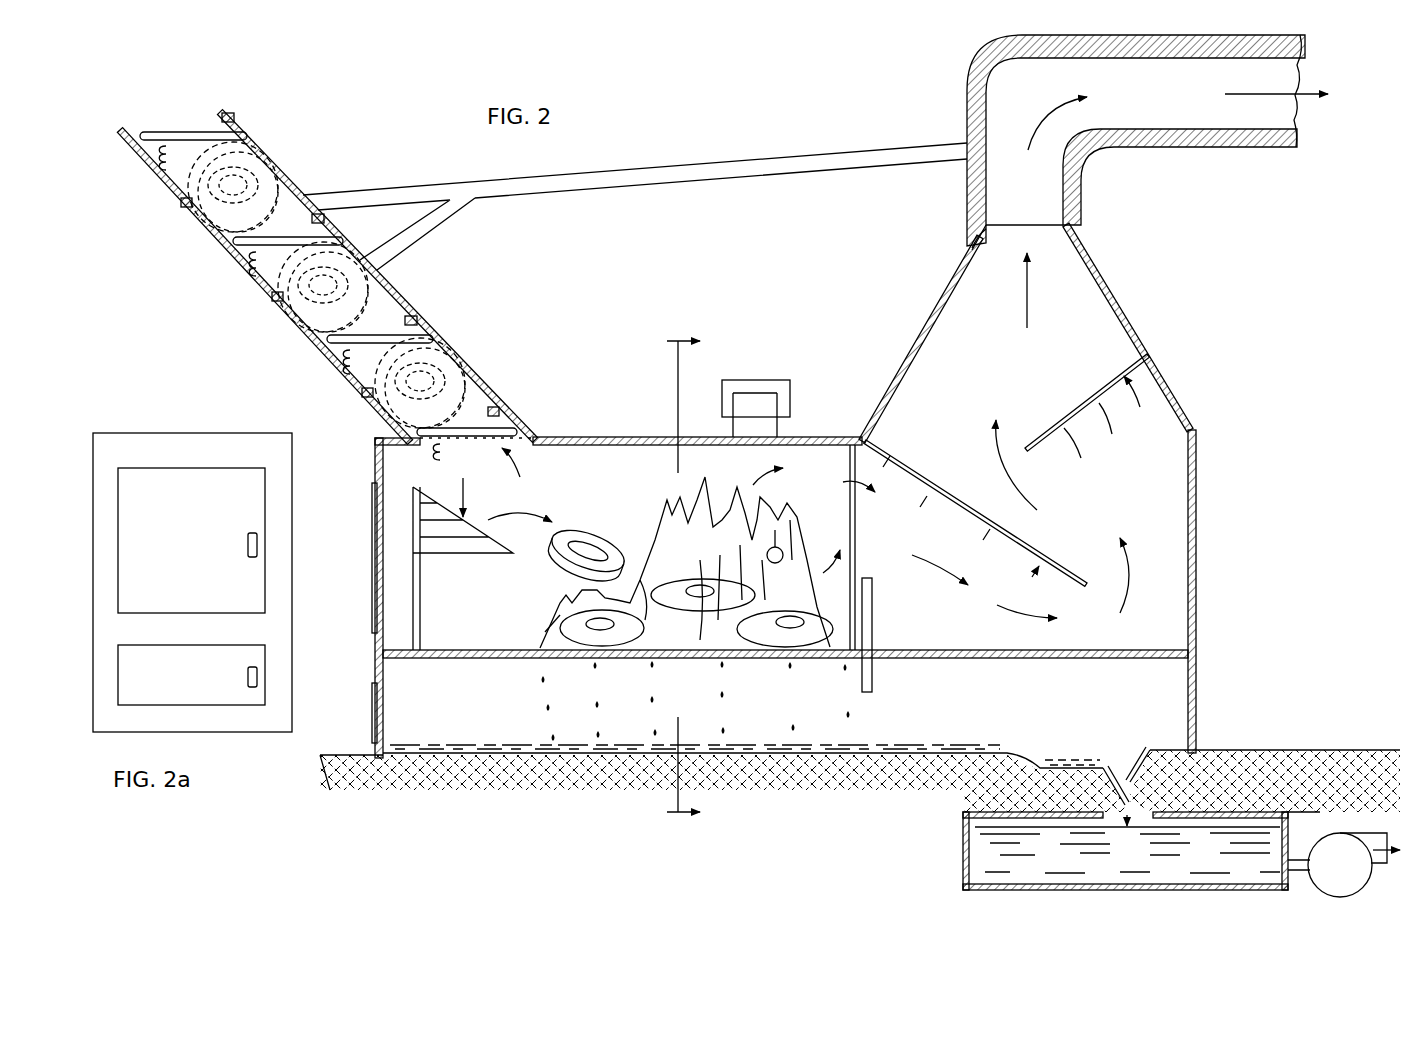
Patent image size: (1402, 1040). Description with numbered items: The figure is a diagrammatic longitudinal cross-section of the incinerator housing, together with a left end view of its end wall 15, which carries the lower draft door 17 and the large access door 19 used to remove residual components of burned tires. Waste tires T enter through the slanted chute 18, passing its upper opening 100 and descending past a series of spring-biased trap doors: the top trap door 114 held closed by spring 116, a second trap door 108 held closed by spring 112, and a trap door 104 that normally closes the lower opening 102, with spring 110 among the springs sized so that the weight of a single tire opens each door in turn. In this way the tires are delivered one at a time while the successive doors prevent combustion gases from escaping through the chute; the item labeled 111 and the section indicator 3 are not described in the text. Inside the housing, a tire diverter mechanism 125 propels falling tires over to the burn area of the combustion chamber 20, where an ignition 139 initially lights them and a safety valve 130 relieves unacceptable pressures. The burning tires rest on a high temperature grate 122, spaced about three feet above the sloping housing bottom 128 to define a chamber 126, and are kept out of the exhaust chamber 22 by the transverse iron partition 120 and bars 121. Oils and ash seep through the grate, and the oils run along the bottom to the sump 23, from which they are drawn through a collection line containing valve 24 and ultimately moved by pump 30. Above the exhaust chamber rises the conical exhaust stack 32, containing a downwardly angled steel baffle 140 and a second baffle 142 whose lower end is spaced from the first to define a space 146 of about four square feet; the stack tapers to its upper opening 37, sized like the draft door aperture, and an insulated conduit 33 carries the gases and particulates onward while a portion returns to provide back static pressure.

In FIG. 2, the upper opening 100 is at (218, 117).
In FIG. 2, the top trap door 114 is at (182, 135).
In FIG. 2, the spring 116 is at (165, 160).
In FIG. 2, the tires T is at (188, 217).
In FIG. 2, the roller 111 is at (297, 242).
In FIG. 2, the spring 112 is at (243, 270).
In FIG. 2, the chute 18 is at (400, 293).
In FIG. 2, the second trap door 108 is at (397, 340).
In FIG. 2, the spring 110 is at (350, 360).
In FIG. 2, the end wall 15 is at (373, 455).
In FIG. 2A, the end wall 15 is at (175, 443).
In FIG. 2, the access door 19 is at (372, 593).
In FIG. 2A, the access door 19 is at (196, 554).
In FIG. 2, the draft door 17 is at (372, 703).
In FIG. 2A, the draft door 17 is at (193, 684).
In FIG. 2, the trap door 104 is at (448, 440).
In FIG. 2, the lower opening 102 is at (533, 471).
In FIG. 2, the tire diverter mechanism 125 is at (423, 597).
In FIG. 2, the combustion chamber 20 is at (638, 496).
In FIG. 2, the safety valve 130 is at (770, 385).
In FIG. 2, the section line 3 is at (694, 579).
In FIG. 2, the ignition 139 is at (781, 551).
In FIG. 2, the bars 121 is at (850, 470).
In FIG. 2, the iron partition 120 is at (872, 630).
In FIG. 2, the high temperature grate 122 is at (482, 662).
In FIG. 2, the housing bottom 128 is at (440, 747).
In FIG. 2, the chamber 126 is at (970, 700).
In FIG. 2, the sump 23 is at (1128, 757).
In FIG. 2, the valve 24 is at (1142, 875).
In FIG. 2, the pump 30 is at (1337, 847).
In FIG. 2, the exhaust chamber 22 is at (1103, 626).
In FIG. 2, the space 146 is at (991, 479).
In FIG. 2, the steel baffle 140 is at (922, 463).
In FIG. 2, the second baffle 142 is at (1070, 410).
In FIG. 2, the exhaust stack 32 is at (1119, 301).
In FIG. 2, the insulated conduit 33 is at (1232, 133).
In FIG. 2, the opening 37 is at (967, 260).